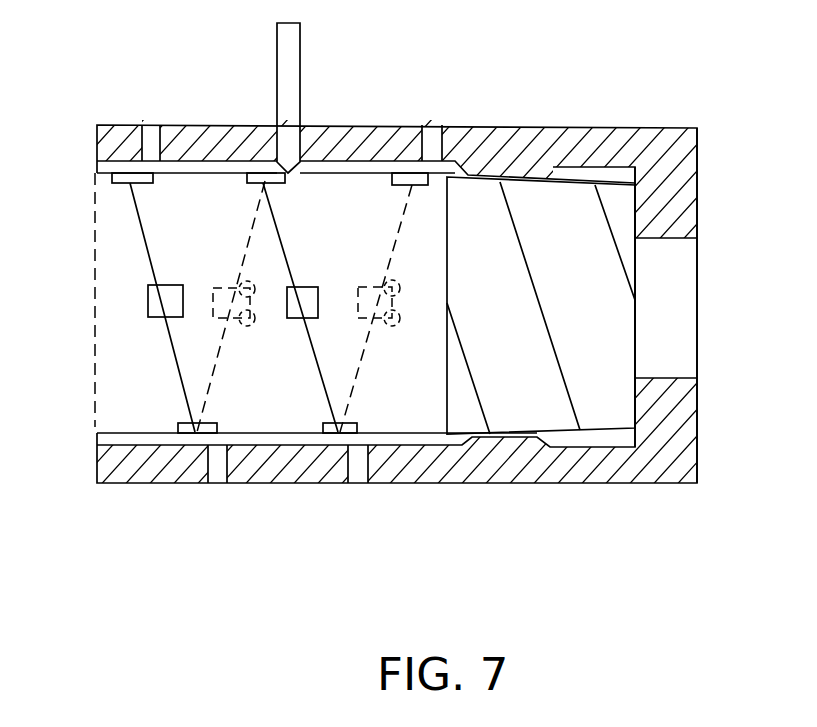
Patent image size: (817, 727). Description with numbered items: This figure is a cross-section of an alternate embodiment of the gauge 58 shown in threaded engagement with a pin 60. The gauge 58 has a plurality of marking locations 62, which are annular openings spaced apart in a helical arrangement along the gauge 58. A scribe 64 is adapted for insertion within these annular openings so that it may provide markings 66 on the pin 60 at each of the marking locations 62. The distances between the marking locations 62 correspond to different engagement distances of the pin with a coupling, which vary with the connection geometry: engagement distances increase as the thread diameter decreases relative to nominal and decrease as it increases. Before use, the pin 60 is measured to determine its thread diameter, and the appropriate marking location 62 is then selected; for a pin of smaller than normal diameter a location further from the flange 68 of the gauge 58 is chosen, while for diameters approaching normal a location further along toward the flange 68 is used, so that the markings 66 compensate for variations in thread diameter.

The gauge 58 is at (651, 137).
The pin 60 is at (541, 305).
The marking locations 62 is at (133, 122).
The scribe 64 is at (301, 64).
The markings 66 is at (163, 285).
The flange 68 is at (698, 212).